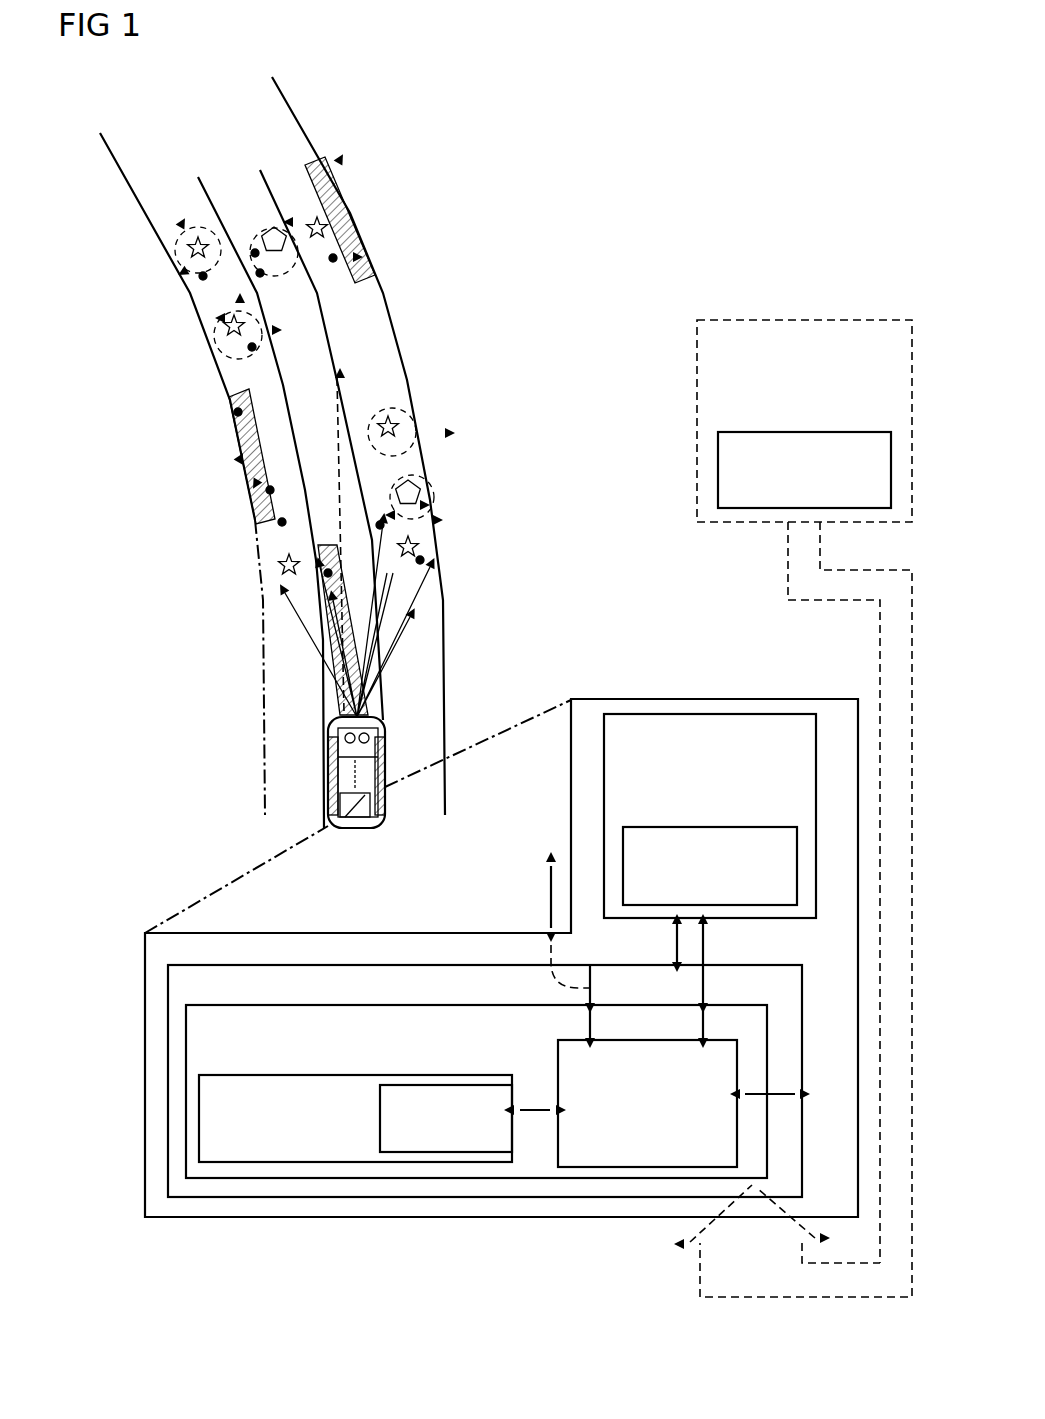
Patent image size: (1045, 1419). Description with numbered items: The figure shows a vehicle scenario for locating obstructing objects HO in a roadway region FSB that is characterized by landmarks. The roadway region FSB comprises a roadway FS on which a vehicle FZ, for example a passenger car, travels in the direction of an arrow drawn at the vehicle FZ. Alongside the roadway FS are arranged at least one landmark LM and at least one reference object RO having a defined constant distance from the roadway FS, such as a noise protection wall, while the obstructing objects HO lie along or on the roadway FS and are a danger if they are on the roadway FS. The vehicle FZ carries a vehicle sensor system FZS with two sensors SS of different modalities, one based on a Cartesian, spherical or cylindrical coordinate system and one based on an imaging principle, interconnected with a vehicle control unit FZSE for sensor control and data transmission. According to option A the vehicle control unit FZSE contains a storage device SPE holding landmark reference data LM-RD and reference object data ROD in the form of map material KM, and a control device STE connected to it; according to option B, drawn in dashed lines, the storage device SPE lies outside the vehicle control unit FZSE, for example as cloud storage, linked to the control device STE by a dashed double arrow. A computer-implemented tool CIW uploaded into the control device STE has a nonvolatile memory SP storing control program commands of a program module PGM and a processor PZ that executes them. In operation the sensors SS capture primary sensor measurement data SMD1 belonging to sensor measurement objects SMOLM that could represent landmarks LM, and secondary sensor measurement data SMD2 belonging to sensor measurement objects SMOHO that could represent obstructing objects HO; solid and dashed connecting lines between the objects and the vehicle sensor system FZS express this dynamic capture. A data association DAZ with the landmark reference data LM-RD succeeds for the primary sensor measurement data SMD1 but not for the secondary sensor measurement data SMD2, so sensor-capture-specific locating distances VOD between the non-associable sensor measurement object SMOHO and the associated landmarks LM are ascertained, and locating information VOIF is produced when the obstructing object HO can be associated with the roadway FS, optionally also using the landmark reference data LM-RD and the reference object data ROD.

The roadway region FSB is at (272, 77).
The roadway FS is at (265, 170).
The reference object RO is at (318, 165).
The reference object data ROD is at (340, 160).
The landmark LM is at (350, 203).
The obstructing object HO is at (280, 228).
The landmark reference data LM-RD is at (185, 225).
The data association DAZ is at (523, 649).
The primary sensor measurement data SMD1 is at (200, 272).
The secondary sensor measurement data SMD2 is at (255, 235).
The sensor measurement object SMOLM is at (365, 244).
The sensor measurement object SMOHO is at (300, 270).
The locating distances VOD is at (350, 199).
The vehicle FZ is at (388, 791).
The sensor SS is at (328, 763).
The vehicle sensor system FZS is at (385, 733).
The vehicle control unit FZSE is at (328, 794).
The control device STE is at (168, 984).
The computer-implemented tool CIW is at (186, 1050).
The memory SP is at (199, 1114).
The program module PGM is at (442, 1158).
The processor PZ is at (640, 1169).
The locating information VOIF is at (755, 1090).
The storage device SPE is at (780, 712).
The map material KM is at (798, 869).